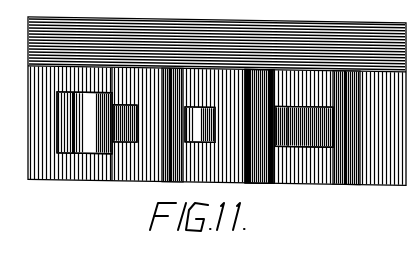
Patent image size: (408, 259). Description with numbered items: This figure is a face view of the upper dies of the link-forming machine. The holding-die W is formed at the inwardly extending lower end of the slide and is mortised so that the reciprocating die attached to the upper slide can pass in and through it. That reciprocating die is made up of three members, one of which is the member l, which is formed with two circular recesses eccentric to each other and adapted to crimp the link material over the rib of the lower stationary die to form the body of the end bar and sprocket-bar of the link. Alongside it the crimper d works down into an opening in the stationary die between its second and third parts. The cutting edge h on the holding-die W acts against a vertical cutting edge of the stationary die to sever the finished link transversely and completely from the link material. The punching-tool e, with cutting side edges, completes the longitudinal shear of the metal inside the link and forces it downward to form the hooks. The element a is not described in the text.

The holding-die w is at (217, 125).
The member of die W' l is at (84, 123).
The aperture a is at (125, 123).
The crimper d is at (200, 124).
The cutting edge h is at (259, 126).
The punching-tool e is at (304, 126).